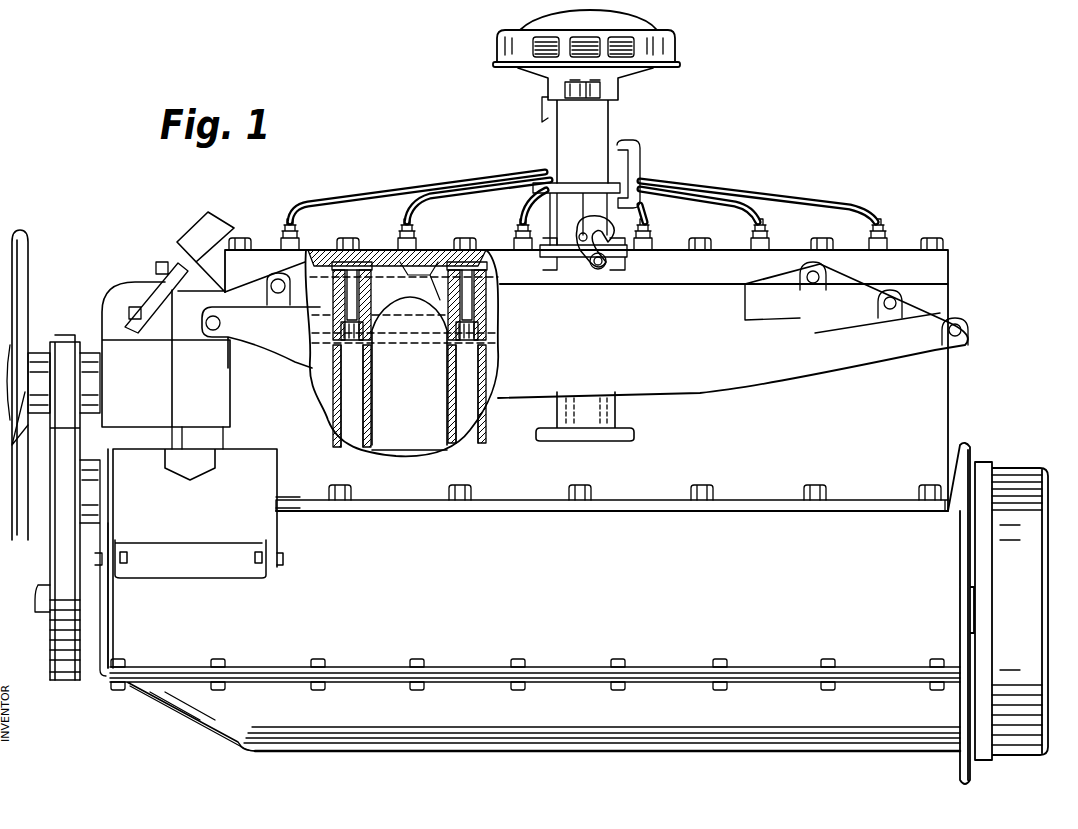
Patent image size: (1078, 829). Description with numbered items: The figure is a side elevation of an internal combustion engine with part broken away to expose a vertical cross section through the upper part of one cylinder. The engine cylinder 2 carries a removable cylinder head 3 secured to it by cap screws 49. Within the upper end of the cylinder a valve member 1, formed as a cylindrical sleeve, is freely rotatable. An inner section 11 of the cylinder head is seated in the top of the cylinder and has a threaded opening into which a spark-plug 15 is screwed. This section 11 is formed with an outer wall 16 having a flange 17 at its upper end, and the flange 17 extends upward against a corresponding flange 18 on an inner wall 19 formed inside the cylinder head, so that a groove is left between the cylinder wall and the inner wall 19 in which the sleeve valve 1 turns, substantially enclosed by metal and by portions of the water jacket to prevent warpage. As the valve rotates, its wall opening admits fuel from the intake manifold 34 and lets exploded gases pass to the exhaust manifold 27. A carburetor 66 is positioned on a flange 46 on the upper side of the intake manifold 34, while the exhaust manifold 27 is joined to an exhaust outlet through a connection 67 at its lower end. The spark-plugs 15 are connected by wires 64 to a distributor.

The valve member 1 is at (335, 322).
The engine cylinder 2 is at (455, 387).
The removable cylinder head 3 is at (321, 250).
The inner section of the cylinder head 11 is at (437, 300).
The spark-plug 15 is at (413, 238).
The outer wall 16 is at (432, 266).
The flange 17 is at (383, 260).
The flange 18 is at (366, 262).
The inner wall 19 is at (490, 300).
The exhaust manifold 27 is at (715, 372).
The intake manifold 34 is at (683, 290).
The flange 46 is at (578, 262).
The cap screws 49 is at (250, 238).
The wires 64 is at (770, 192).
The carburetor 66 is at (600, 133).
The connection 67 is at (600, 438).